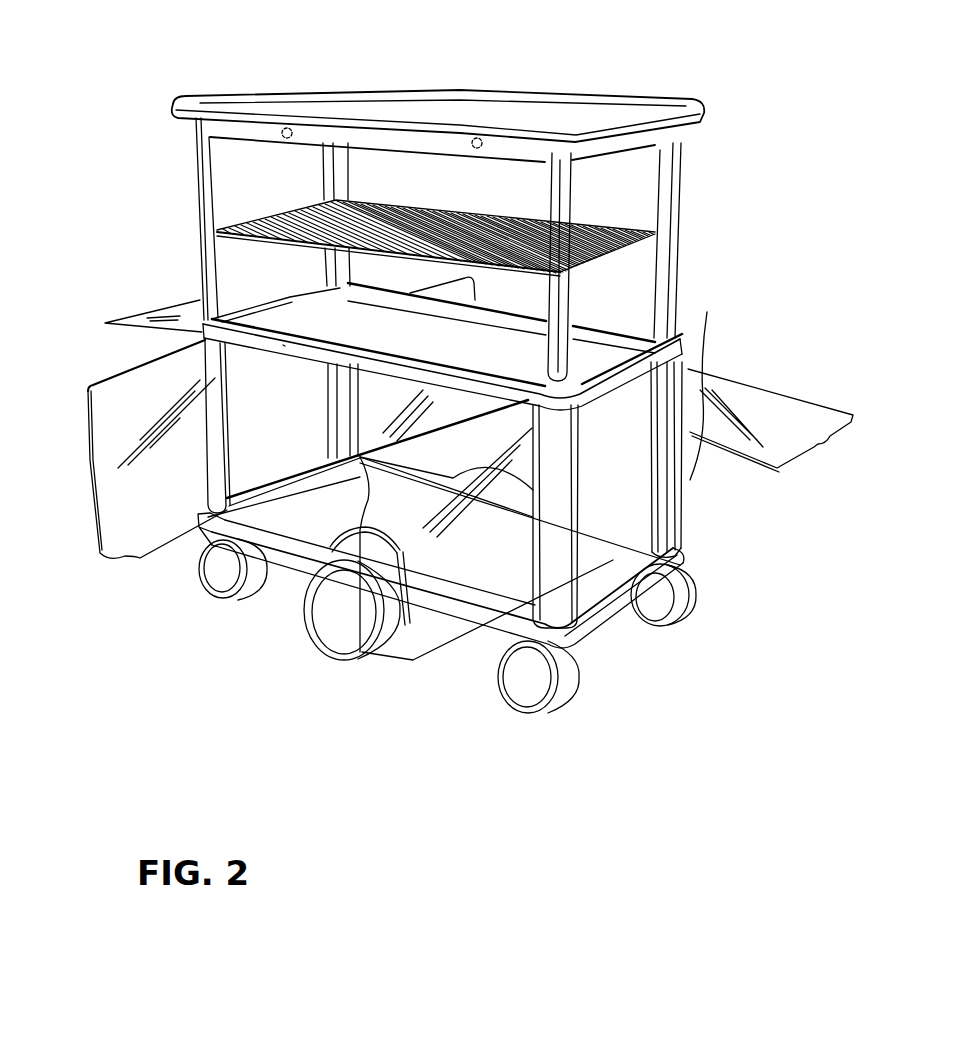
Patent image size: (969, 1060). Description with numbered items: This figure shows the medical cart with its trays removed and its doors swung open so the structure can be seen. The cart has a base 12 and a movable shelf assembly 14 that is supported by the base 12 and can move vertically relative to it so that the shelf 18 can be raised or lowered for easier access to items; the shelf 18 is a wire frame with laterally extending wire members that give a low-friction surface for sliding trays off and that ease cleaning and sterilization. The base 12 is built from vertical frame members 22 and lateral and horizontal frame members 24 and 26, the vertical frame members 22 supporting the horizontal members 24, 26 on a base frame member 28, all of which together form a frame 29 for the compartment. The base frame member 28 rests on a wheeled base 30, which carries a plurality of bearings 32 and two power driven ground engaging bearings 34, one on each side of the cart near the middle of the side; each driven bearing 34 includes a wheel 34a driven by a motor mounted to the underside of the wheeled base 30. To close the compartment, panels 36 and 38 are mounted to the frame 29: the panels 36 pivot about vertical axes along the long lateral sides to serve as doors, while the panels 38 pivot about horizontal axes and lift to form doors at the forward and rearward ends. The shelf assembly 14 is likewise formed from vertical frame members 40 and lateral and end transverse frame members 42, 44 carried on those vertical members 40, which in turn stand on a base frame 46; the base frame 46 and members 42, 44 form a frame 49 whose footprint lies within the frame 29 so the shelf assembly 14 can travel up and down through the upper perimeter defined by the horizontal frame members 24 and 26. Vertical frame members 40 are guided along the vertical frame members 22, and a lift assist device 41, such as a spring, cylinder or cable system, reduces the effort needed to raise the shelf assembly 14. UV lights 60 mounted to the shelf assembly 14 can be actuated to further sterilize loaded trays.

The base 12 is at (128, 359).
The shelf assembly 14 is at (726, 175).
The shelf 18 is at (270, 212).
The vertical frame members 22 is at (680, 504).
The lateral frame member 24 is at (457, 373).
The horizontal frame member 26 is at (636, 345).
The base frame member 28 is at (287, 533).
The frame 29 is at (155, 272).
The wheeled base 30 is at (236, 533).
The bearings 32 is at (687, 603).
The power driven ground engaging bearing 34 is at (337, 617).
The wheel 34a is at (312, 620).
The panels 36 is at (117, 528).
The panels 38 is at (157, 318).
The vertical frame members 40 is at (557, 168).
The lift assist device 41 is at (673, 550).
The lateral transverse frame member 42 is at (373, 128).
The end transverse frame member 44 is at (632, 142).
The base frame 46 is at (283, 345).
The frame 49 is at (157, 108).
The UV lights 60 is at (288, 127).